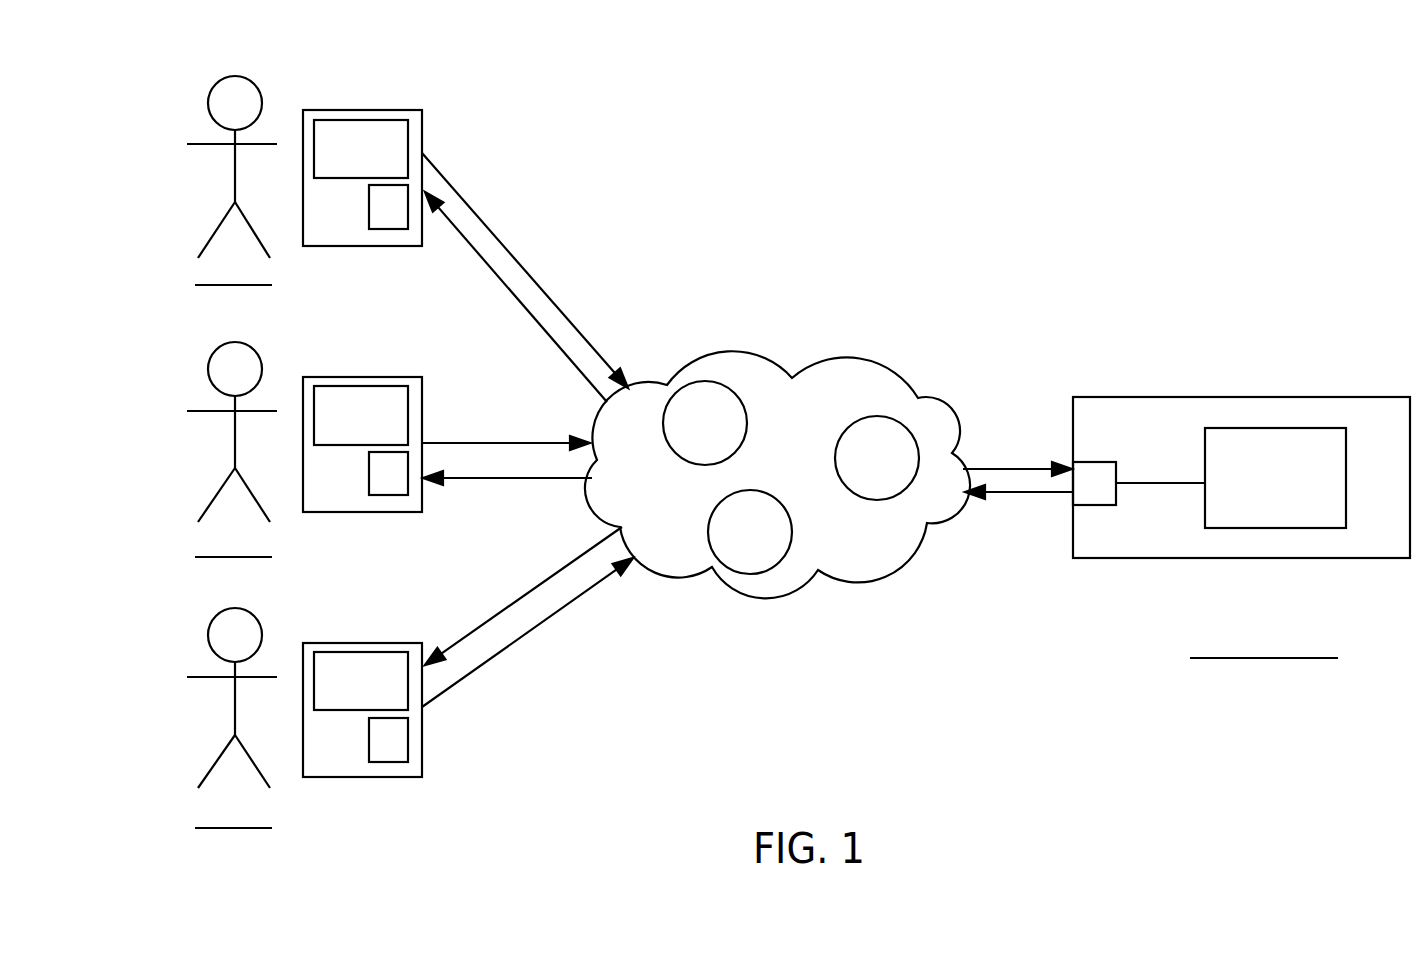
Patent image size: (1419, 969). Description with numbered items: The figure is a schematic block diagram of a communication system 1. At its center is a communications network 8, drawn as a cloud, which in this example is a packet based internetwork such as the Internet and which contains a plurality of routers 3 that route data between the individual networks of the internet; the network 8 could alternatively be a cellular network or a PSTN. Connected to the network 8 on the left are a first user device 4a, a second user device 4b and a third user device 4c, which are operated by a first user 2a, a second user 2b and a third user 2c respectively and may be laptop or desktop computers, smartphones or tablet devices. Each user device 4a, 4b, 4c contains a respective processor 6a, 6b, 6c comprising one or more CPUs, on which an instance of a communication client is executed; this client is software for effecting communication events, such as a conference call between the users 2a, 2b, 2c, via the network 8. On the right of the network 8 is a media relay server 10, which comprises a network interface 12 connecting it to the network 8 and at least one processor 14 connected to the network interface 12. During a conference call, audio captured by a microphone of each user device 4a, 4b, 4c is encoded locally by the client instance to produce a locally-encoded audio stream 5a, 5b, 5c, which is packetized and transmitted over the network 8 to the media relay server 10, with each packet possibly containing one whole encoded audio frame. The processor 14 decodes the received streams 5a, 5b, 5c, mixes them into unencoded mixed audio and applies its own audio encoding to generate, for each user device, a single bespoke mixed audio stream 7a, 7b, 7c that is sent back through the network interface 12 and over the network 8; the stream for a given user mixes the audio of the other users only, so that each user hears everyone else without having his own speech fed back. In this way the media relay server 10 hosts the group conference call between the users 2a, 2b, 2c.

The communication system 1 is at (1172, 82).
The first user 2a is at (208, 98).
The second user 2b is at (208, 365).
The third user 2c is at (208, 623).
The router 3 is at (678, 447).
The first user device 4a is at (422, 127).
The second user device 4b is at (422, 392).
The third user device 4c is at (422, 728).
The locally-encoded audio stream 5a is at (522, 267).
The locally-encoded audio stream 5b is at (545, 440).
The locally-encoded audio stream 5c is at (563, 617).
The processor 6a is at (390, 223).
The processor 6b is at (390, 493).
The processor 6c is at (390, 755).
The mixed audio stream 7a is at (508, 288).
The mixed audio stream 7b is at (480, 480).
The mixed audio stream 7c is at (508, 588).
The communications network 8 is at (742, 350).
The media relay server 10 is at (1200, 397).
The network interface 12 is at (1105, 503).
The processor 14 is at (1250, 528).